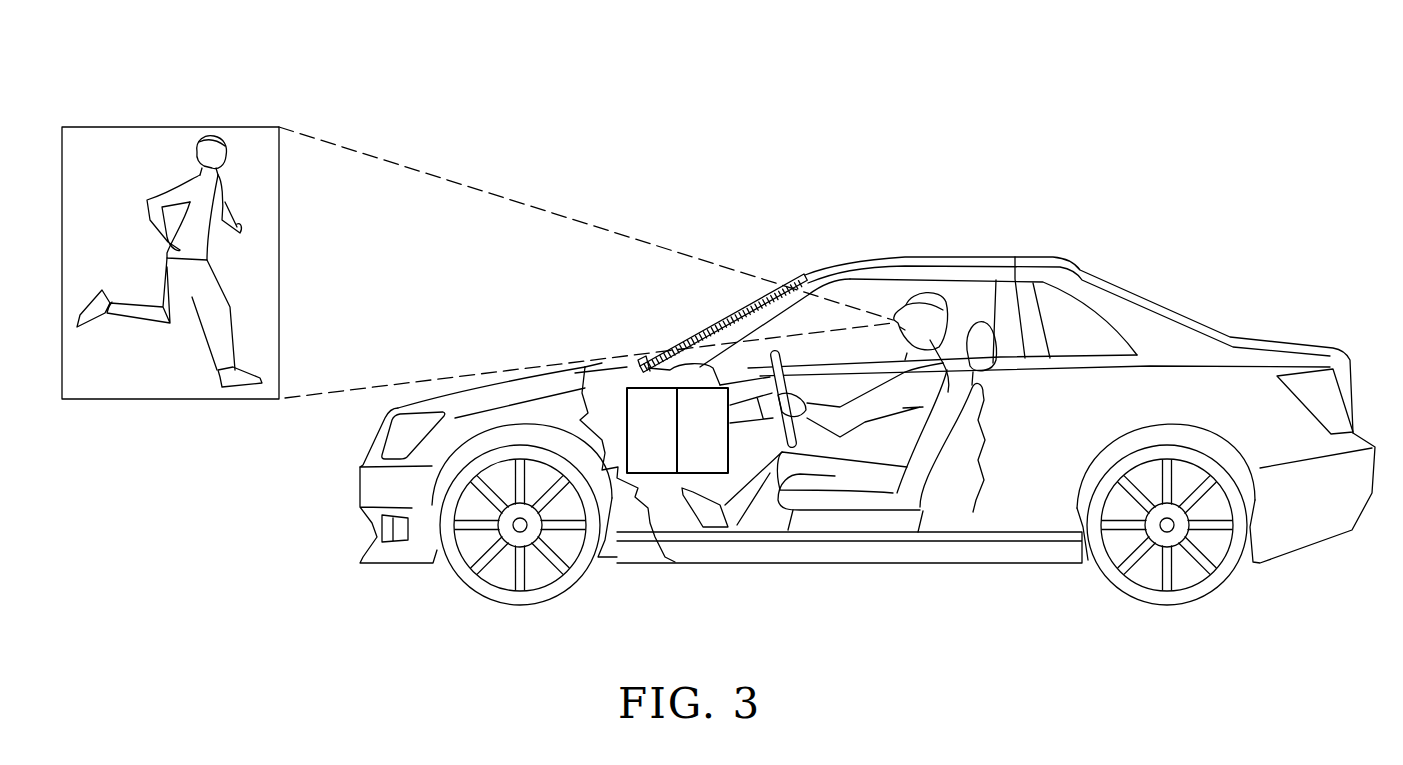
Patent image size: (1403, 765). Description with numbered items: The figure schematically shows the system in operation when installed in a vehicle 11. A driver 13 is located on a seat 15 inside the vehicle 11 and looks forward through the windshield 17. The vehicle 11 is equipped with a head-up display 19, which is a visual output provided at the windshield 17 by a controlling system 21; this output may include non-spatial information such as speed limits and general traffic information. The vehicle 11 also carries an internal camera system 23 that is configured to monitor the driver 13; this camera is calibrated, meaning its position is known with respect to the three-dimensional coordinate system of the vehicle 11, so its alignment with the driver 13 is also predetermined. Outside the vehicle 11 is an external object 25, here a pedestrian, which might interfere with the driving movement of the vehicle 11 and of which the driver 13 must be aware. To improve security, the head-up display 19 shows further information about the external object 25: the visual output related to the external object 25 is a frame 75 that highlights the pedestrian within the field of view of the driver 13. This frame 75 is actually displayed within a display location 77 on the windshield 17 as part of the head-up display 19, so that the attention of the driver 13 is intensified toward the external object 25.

The vehicle 11 is at (985, 257).
The driver 13 is at (912, 297).
The seat 15 is at (973, 390).
The windshield 17 is at (780, 280).
The head-up display 19 is at (772, 322).
The controlling system 21 is at (632, 405).
The internal camera system 23 is at (697, 400).
The external object 25 is at (206, 125).
The frame 75 is at (120, 126).
The display location 77 is at (730, 310).